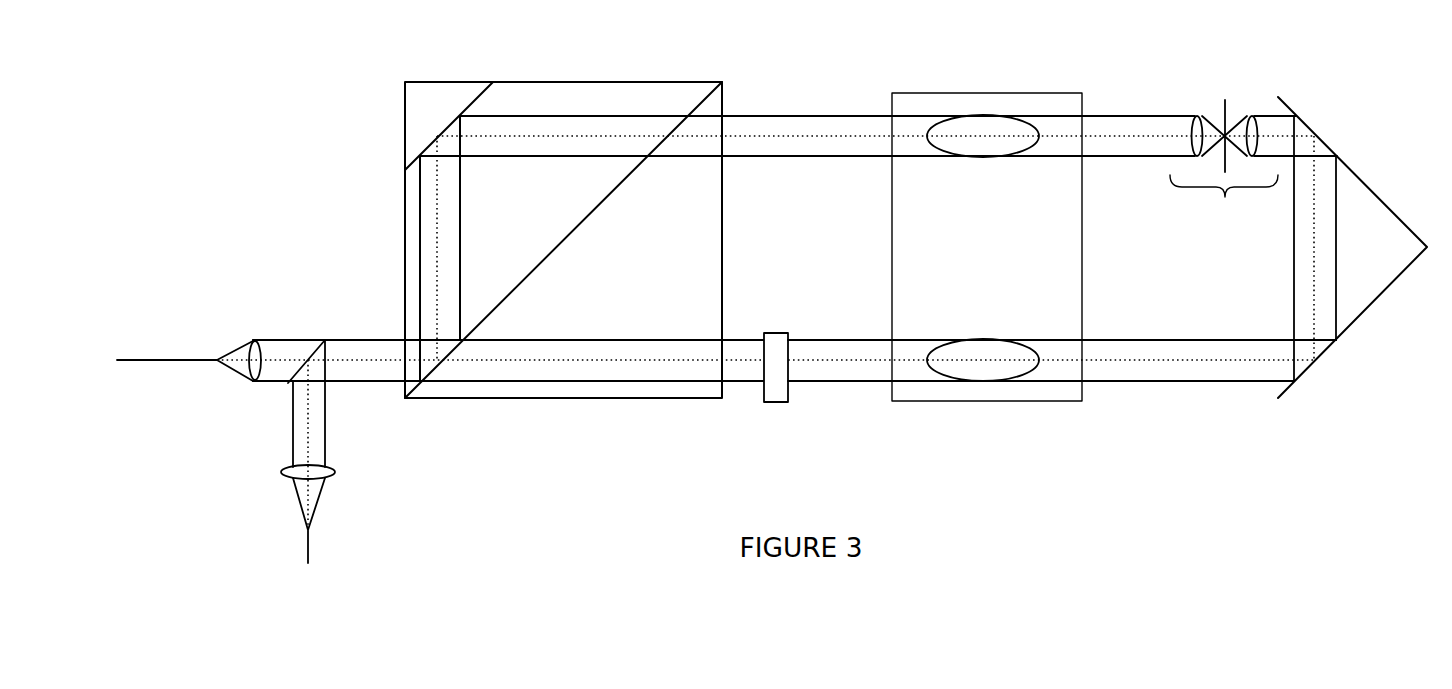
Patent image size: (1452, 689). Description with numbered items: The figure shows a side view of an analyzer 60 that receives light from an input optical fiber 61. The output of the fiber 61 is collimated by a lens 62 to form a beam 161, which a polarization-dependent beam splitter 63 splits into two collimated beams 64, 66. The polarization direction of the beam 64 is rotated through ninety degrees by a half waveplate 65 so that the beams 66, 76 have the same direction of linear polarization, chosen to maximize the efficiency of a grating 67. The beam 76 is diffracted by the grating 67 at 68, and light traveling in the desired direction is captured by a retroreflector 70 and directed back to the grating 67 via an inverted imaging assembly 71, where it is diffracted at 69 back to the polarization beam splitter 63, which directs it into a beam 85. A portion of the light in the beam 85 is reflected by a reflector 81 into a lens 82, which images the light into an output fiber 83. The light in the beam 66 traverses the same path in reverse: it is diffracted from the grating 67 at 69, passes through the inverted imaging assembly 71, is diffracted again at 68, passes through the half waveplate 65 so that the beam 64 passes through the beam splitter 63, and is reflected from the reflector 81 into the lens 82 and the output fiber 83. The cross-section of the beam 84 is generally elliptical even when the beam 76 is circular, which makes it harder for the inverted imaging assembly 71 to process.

The analyzer 60 is at (238, 113).
The input optical fiber 61 is at (177, 365).
The lens 62 is at (248, 378).
The beam 161 is at (278, 340).
The reflector 81 is at (327, 340).
The beam 85 is at (347, 353).
The lens 82 is at (335, 467).
The output fiber 83 is at (308, 547).
The polarization-dependent beam splitter 63 is at (570, 390).
The beam 64 is at (737, 370).
The half waveplate 65 is at (775, 392).
The beam 66 is at (802, 147).
The beam 76 is at (850, 373).
The grating 67 is at (1045, 395).
The diffraction location 68 is at (975, 345).
The diffraction location 69 is at (987, 152).
The inverted imaging assembly 71 is at (1224, 167).
The retroreflector 70 is at (1387, 288).
The beam 84 is at (1165, 368).